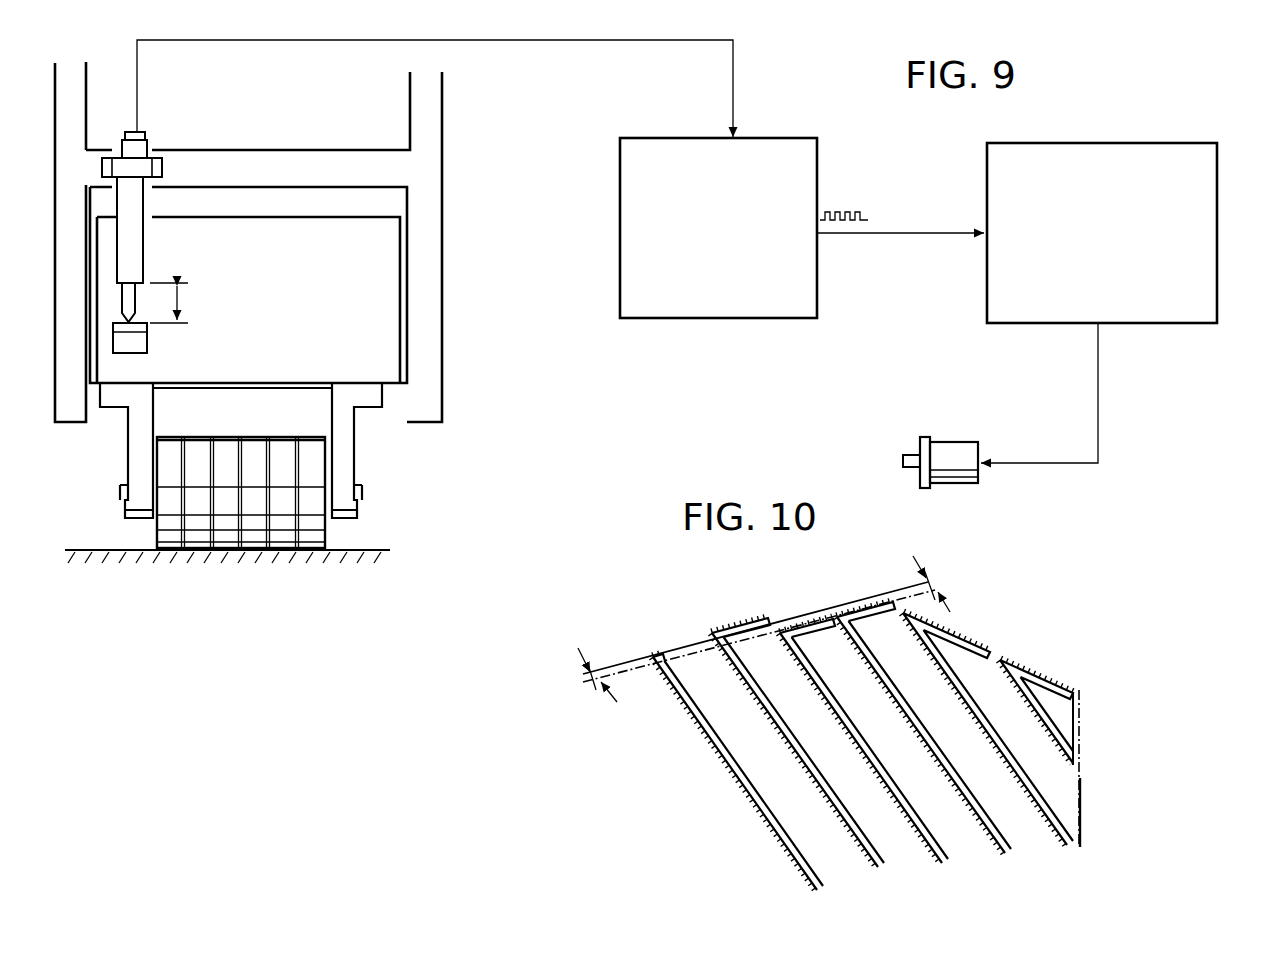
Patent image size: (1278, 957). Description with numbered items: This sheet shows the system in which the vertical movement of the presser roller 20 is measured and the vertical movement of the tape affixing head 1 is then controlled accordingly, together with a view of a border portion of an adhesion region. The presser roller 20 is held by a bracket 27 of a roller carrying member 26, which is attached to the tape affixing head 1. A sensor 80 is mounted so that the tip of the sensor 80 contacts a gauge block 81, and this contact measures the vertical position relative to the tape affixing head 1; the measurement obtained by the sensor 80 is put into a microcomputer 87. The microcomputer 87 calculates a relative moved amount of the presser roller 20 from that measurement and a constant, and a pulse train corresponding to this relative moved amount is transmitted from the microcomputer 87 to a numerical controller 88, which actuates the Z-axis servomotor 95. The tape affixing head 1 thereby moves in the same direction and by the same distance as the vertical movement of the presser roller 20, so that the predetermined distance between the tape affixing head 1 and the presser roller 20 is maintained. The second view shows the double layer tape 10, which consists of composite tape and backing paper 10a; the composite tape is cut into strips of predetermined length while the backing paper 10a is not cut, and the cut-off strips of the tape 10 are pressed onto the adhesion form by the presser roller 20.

In FIG. 9, the tape affixing head 1 is at (446, 219).
In FIG. 9, the roller carrying member 26 is at (375, 214).
In FIG. 9, the bracket 27 is at (343, 452).
In FIG. 9, the presser roller 20 is at (333, 538).
In FIG. 9, the sensor 80 is at (128, 232).
In FIG. 9, the gauge block 81 is at (132, 342).
In FIG. 9, the microcomputer 87 is at (822, 182).
In FIG. 9, the numerical controller 88 is at (1223, 194).
In FIG. 9, the Z-axis servomotor 95 is at (916, 473).
In FIG. 10, the double layer tape 10 is at (808, 733).
In FIG. 10, the backing paper 10a is at (668, 650).